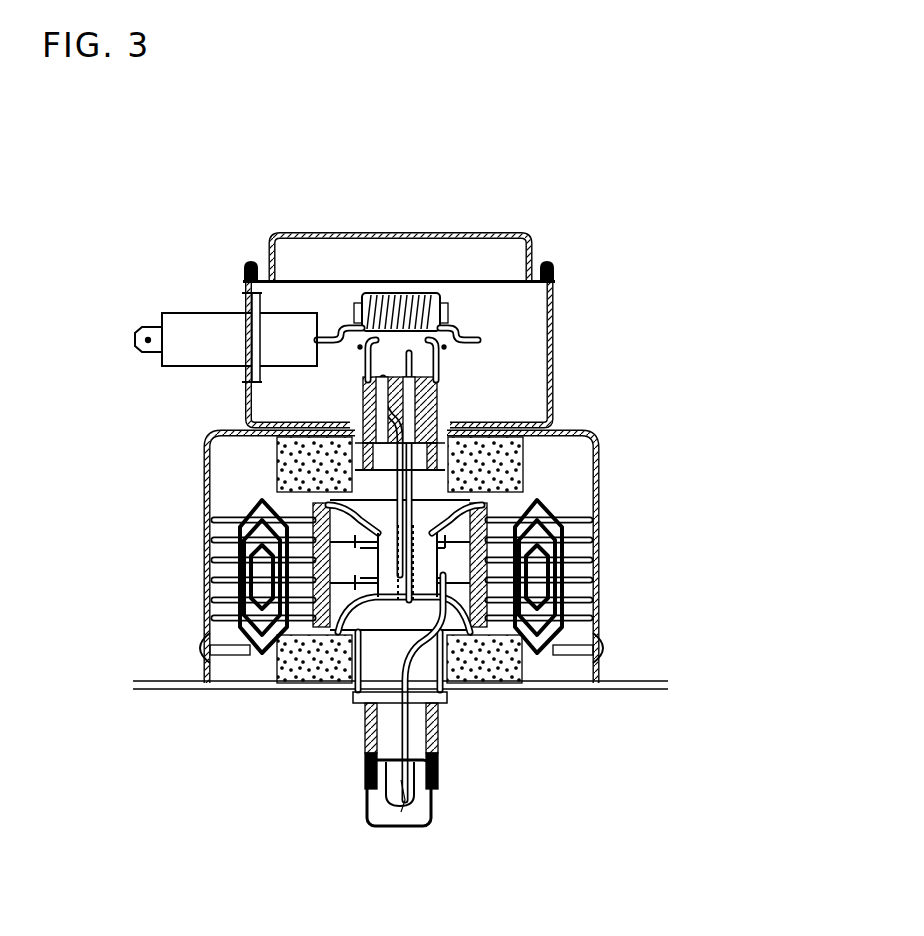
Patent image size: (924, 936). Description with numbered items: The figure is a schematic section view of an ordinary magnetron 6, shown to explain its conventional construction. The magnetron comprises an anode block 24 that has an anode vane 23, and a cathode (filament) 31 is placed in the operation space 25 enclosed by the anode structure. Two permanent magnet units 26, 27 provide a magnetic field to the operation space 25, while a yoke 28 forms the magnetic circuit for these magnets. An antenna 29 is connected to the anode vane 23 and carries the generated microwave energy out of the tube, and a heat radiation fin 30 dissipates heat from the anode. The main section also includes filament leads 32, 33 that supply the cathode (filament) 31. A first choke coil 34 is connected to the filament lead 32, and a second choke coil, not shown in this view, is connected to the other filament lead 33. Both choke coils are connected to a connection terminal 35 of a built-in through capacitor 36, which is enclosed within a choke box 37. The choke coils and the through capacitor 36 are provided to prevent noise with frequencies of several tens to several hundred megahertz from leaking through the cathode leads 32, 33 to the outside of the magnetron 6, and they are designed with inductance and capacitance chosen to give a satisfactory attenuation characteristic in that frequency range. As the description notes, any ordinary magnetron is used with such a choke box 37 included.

The ordinary magnetron 6 is at (563, 232).
The anode vane 23 is at (475, 640).
The anode block 24 is at (455, 575).
The operation space 25 is at (355, 640).
The permanent magnet unit 26 is at (292, 676).
The permanent magnet unit 27 is at (283, 468).
The yoke 28 is at (600, 438).
The antenna 29 is at (403, 707).
The heat radiation fin 30 is at (512, 592).
The cathode (filament) 31 is at (440, 546).
The filament lead 32 is at (415, 410).
The filament lead 33 is at (363, 388).
The first choke coil 34 is at (443, 321).
The connection terminal 35 is at (142, 328).
The through capacitor 36 is at (278, 325).
The choke box 37 is at (318, 248).